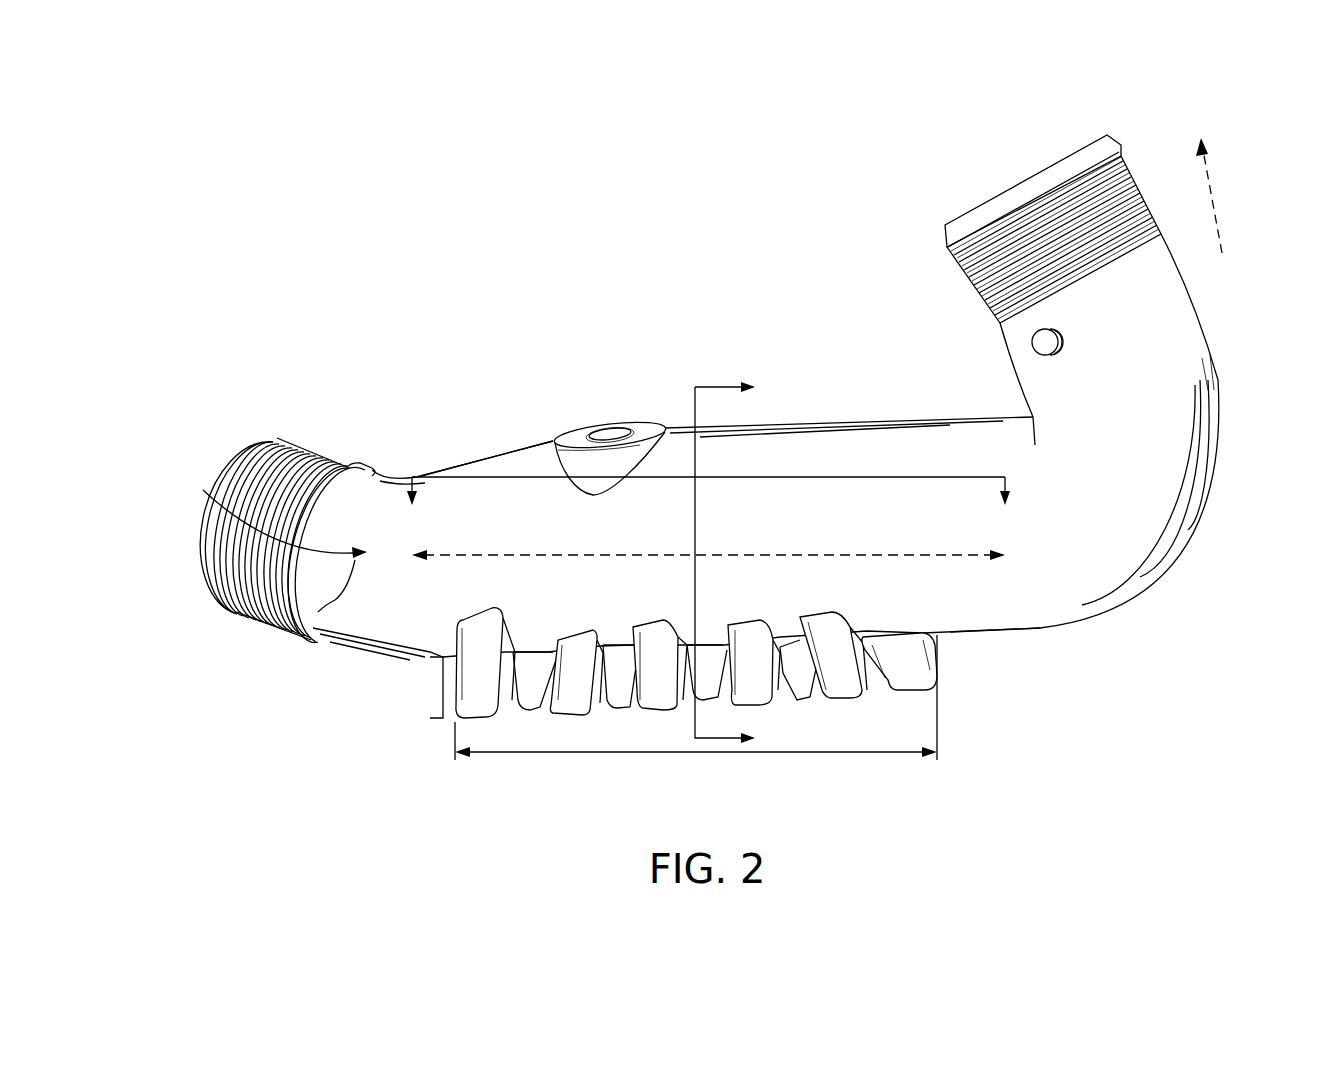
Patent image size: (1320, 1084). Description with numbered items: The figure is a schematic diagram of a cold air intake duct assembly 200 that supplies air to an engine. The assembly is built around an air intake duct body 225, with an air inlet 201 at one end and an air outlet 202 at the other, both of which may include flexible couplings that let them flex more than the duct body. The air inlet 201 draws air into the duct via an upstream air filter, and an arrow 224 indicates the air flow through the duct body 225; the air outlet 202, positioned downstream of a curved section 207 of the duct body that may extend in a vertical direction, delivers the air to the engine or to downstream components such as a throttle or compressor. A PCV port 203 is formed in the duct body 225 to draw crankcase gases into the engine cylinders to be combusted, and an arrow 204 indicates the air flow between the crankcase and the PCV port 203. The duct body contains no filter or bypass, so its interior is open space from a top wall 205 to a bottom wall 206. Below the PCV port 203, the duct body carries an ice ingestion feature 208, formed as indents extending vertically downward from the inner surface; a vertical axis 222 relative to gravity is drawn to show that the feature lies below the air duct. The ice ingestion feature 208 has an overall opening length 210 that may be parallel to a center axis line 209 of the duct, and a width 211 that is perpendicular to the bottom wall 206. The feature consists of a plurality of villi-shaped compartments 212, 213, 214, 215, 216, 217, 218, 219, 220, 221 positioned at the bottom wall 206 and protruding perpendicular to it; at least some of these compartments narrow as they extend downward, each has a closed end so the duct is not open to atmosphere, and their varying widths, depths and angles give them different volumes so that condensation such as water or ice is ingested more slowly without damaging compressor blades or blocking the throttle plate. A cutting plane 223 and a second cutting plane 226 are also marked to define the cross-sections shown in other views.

The cold air intake duct assembly 200 is at (363, 318).
The air inlet 201 is at (240, 430).
The air outlet 202 is at (1102, 115).
The PCV port 203 is at (588, 428).
The arrow 204 is at (571, 411).
The top wall 205 is at (940, 418).
The bottom wall 206 is at (1040, 628).
The curved section 207 is at (1138, 640).
The ice ingestion feature 208 is at (696, 724).
The center axis line 209 is at (874, 540).
The overall opening length 210 is at (887, 754).
The width 211 is at (443, 692).
The compartment 212 is at (464, 693).
The compartment 213 is at (530, 710).
The compartment 214 is at (556, 689).
The compartment 215 is at (624, 708).
The compartment 216 is at (645, 683).
The compartment 217 is at (723, 690).
The compartment 218 is at (738, 683).
The compartment 219 is at (803, 688).
The compartment 220 is at (826, 680).
The compartment 221 is at (899, 679).
The vertical axis 222 is at (1218, 205).
The cutting plane 223 is at (713, 387).
The arrow 224 is at (325, 557).
The air intake duct body 225 is at (806, 450).
The cutting plane 226 is at (478, 477).